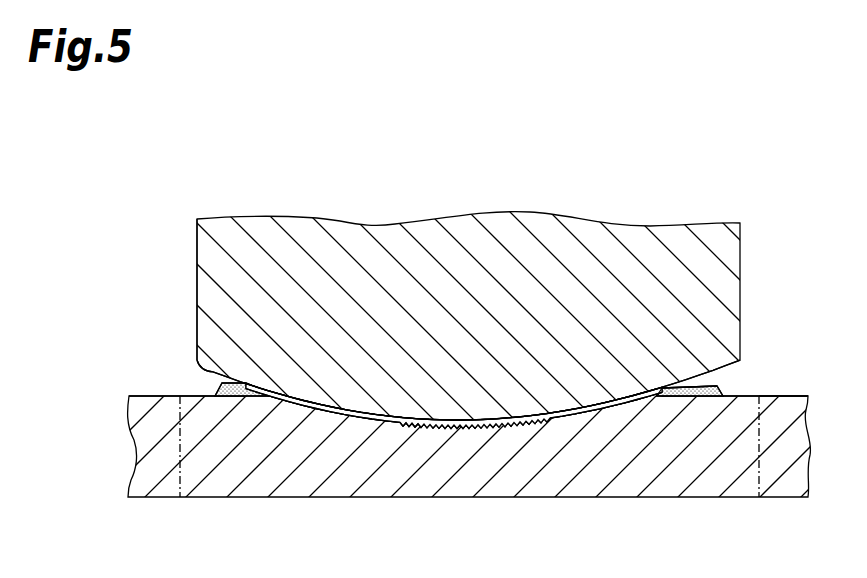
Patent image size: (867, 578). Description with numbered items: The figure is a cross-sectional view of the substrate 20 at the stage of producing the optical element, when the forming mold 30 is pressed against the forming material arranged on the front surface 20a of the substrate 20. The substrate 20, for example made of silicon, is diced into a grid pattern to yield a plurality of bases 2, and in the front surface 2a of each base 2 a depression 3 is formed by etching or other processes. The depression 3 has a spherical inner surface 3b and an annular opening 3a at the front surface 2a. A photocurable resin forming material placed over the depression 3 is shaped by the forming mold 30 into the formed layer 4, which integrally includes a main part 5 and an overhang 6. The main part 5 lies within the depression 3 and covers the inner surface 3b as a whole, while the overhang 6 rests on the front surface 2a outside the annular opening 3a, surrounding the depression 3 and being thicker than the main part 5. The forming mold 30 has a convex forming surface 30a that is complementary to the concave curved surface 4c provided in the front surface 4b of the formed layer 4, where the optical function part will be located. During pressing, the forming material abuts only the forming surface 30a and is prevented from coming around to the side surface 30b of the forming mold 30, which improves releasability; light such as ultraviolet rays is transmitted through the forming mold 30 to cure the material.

The base 2 is at (760, 470).
The front surface of the base 2a is at (745, 396).
The depression 3 is at (368, 414).
The annular opening 3a is at (281, 393).
The inner surface of the depression 3b is at (576, 414).
The formed layer 4 is at (473, 430).
The front surface of the formed layer 4b is at (713, 375).
The curved surface 4c is at (659, 396).
The main part 5 is at (412, 428).
The overhang 6 is at (238, 396).
The substrate 20 is at (148, 448).
The front surface of the substrate 20a is at (150, 396).
The forming mold 30 is at (726, 270).
The forming surface 30a is at (215, 369).
The side surface of the forming mold 30b is at (197, 288).